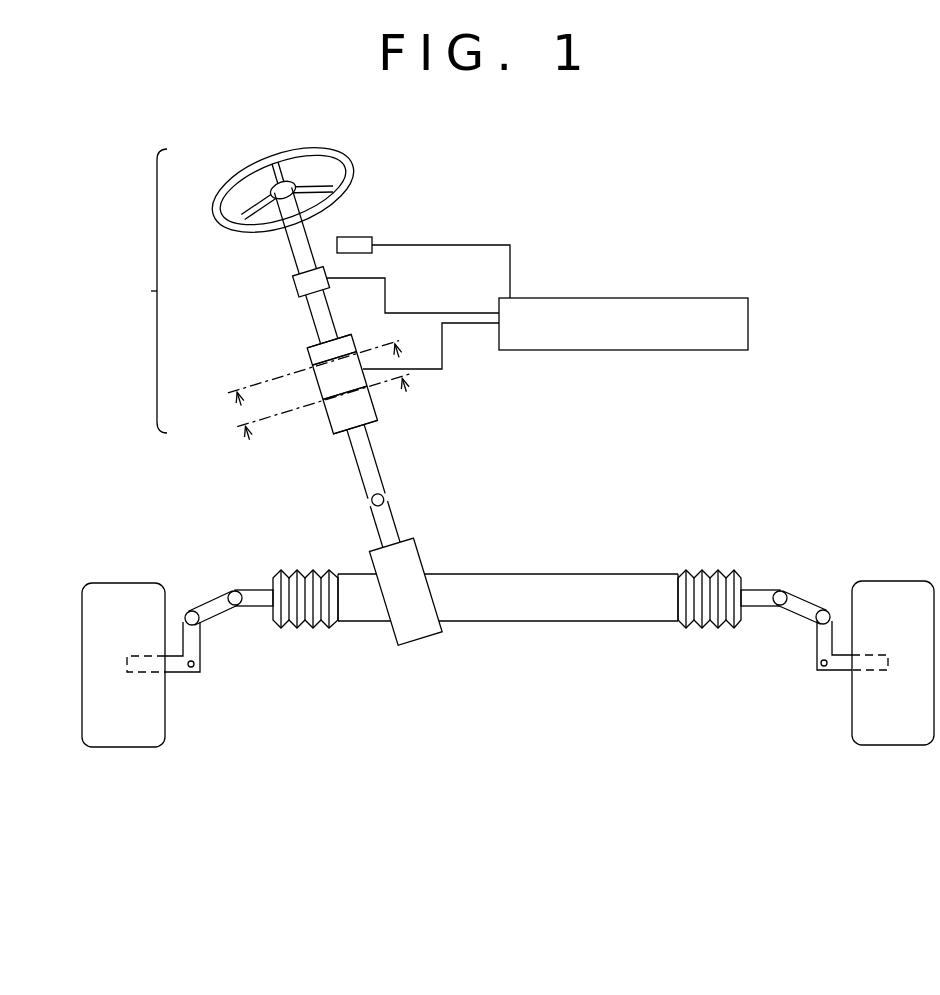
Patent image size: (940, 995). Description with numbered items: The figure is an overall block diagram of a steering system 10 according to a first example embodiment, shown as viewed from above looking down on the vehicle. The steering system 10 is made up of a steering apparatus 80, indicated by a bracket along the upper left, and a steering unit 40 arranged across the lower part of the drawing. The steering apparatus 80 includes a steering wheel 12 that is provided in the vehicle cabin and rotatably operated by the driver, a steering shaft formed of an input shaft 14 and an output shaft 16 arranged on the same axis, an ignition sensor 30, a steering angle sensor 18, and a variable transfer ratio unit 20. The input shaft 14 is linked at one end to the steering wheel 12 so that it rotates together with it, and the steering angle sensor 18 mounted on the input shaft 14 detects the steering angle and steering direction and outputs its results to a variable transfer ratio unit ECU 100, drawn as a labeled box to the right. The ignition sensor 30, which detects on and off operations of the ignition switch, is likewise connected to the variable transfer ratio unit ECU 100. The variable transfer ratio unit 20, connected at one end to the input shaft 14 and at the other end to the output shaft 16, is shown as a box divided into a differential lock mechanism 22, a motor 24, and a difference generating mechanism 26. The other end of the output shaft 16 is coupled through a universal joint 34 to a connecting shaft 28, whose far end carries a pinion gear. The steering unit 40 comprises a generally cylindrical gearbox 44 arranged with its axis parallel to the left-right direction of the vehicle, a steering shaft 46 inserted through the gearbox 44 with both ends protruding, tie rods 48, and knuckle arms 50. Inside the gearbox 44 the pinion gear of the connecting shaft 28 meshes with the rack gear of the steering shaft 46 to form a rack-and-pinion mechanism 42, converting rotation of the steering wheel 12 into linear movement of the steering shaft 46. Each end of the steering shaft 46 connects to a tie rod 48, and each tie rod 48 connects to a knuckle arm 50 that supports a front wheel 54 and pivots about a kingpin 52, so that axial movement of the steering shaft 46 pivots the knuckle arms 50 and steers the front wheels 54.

The steering system 10 is at (537, 758).
The steering wheel 12 is at (353, 173).
The input shaft 14 is at (293, 256).
The output shaft 16 is at (360, 477).
The steering angle sensor 18 is at (296, 292).
The variable transfer ratio unit 20 is at (357, 397).
The differential lock mechanism 22 is at (309, 359).
The motor 24 is at (315, 387).
The difference generating mechanism 26 is at (327, 420).
The connecting shaft 28 is at (378, 535).
The ignition sensor 30 is at (360, 237).
The universal joint 34 is at (368, 500).
The steering unit 40 is at (625, 638).
The rack-and-pinion mechanism 42 is at (431, 568).
The gearbox 44 is at (620, 574).
The steering shaft 46 is at (253, 590).
The tie rod 48 is at (210, 602).
The knuckle arm 50 is at (182, 673).
The kingpin 52 is at (195, 673).
The front wheel 54 is at (125, 583).
The steering apparatus 80 is at (139, 291).
The variable transfer ratio unit ECU 100 is at (678, 298).